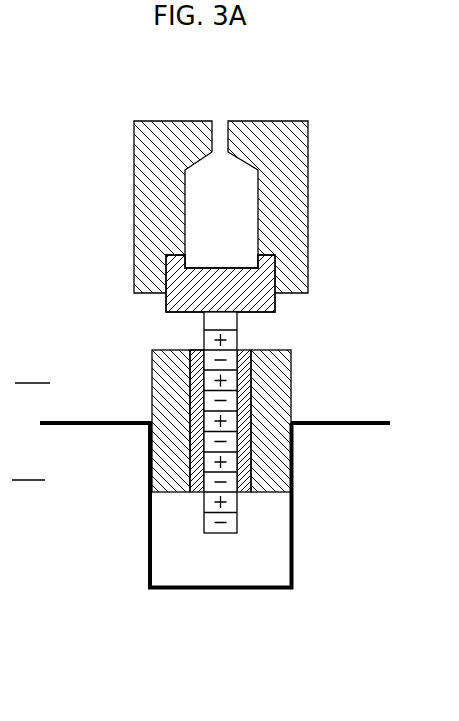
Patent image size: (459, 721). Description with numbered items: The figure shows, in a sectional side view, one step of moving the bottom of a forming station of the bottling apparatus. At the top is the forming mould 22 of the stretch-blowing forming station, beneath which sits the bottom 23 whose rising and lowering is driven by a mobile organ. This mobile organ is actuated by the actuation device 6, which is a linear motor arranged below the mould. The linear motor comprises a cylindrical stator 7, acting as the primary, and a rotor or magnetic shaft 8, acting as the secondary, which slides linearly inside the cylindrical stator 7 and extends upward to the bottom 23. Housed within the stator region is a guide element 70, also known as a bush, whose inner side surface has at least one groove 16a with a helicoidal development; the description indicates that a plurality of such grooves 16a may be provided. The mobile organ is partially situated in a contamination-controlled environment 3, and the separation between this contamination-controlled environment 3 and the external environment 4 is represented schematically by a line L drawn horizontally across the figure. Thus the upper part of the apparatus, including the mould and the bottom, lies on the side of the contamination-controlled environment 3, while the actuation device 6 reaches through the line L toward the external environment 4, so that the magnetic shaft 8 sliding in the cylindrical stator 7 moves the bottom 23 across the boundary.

The forming mould 22 is at (134, 178).
The bottom 23 is at (275, 305).
The groove 16a is at (193, 353).
The external environment 4 is at (32, 367).
The contamination-controlled environment 3 is at (28, 463).
The guide element 70 is at (190, 468).
The magnetic shaft 8 is at (204, 527).
The cylindrical stator 7 is at (280, 474).
The line L is at (335, 421).
The actuation device 6 is at (320, 518).